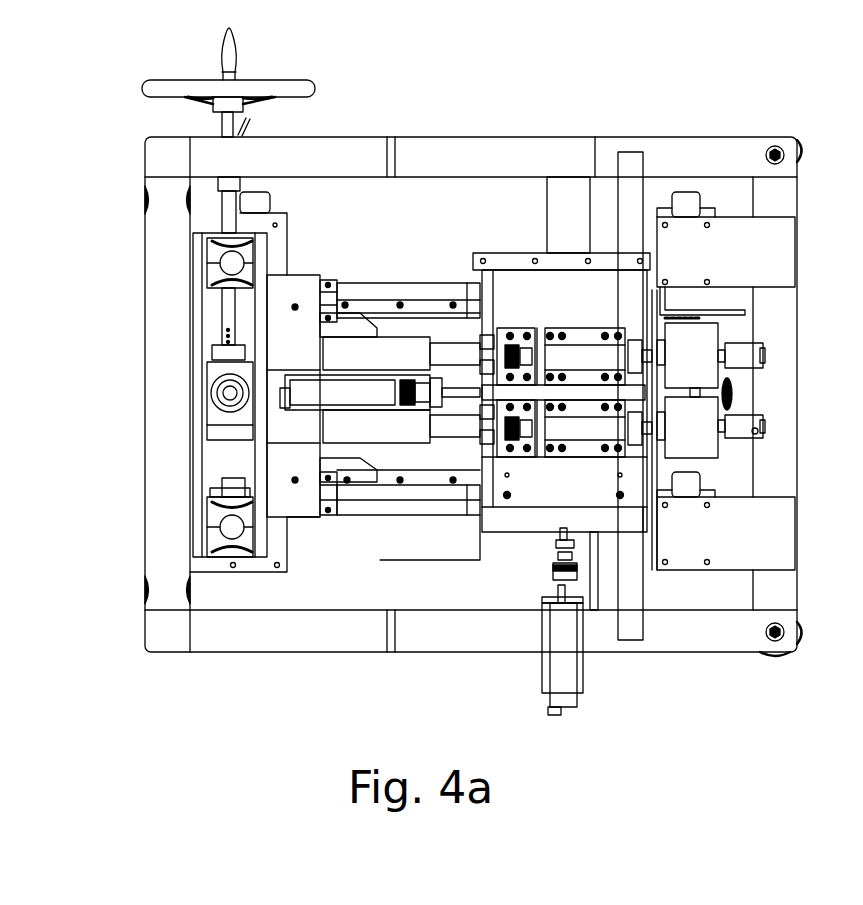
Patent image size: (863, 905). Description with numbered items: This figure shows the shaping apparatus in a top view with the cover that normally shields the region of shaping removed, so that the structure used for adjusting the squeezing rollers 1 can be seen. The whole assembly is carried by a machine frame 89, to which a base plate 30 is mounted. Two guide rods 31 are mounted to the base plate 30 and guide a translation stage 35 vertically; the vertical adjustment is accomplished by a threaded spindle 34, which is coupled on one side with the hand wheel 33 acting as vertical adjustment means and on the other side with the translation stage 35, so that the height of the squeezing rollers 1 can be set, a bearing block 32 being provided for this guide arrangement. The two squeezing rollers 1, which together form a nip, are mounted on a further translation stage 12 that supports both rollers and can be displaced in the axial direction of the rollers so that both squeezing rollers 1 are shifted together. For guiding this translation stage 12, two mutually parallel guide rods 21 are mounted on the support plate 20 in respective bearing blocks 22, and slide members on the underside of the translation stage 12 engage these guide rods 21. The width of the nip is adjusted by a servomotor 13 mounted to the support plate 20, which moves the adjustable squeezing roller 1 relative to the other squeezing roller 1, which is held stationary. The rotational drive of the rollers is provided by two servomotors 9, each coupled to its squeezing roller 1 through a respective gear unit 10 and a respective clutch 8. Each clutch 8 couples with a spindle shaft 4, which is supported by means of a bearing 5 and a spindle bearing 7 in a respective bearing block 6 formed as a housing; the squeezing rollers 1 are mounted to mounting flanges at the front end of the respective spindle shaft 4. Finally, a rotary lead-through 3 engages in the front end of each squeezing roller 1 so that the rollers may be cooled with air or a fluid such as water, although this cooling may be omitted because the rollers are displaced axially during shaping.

The squeezing rollers 1 is at (705, 323).
The rotary lead-through 3 is at (757, 350).
The spindle shaft 4 is at (580, 348).
The bearing 5 is at (517, 330).
The bearing block 6 is at (490, 275).
The spindle bearing 7 is at (635, 345).
The clutch 8 is at (440, 340).
The servomotor 9 is at (300, 285).
The gear unit 10 is at (385, 350).
The translation stage 12 is at (623, 522).
The servomotor for adjusting the nip 13 is at (567, 700).
The support plate 20 is at (397, 517).
The guide rod 21 is at (355, 300).
The bearing block 22 is at (325, 290).
The base plate 30 is at (190, 462).
The guide rod 31 is at (232, 263).
The bearing block 32 is at (215, 537).
The hand wheel 33 is at (160, 87).
The threaded spindle 34 is at (225, 393).
The translation stage 35 is at (262, 327).
The machine frame 89 is at (150, 225).